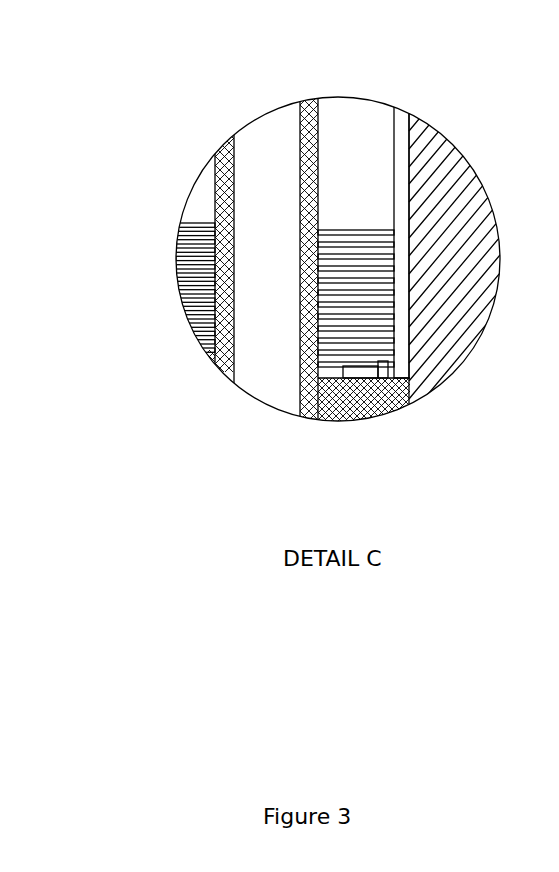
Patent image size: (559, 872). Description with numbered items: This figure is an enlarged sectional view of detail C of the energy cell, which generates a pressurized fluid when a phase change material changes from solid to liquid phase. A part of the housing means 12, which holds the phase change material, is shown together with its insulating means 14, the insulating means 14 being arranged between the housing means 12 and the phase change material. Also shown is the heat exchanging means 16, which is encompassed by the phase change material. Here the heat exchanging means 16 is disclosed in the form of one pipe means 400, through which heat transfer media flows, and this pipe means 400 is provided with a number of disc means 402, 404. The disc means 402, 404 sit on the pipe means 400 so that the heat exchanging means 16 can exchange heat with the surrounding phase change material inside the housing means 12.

The housing means 12 is at (411, 230).
The insulating means 14 is at (405, 121).
The heat exchanging means 16 is at (318, 106).
The pipe means 400 is at (216, 160).
The disc means 402 is at (213, 367).
The disc means 404 is at (197, 358).